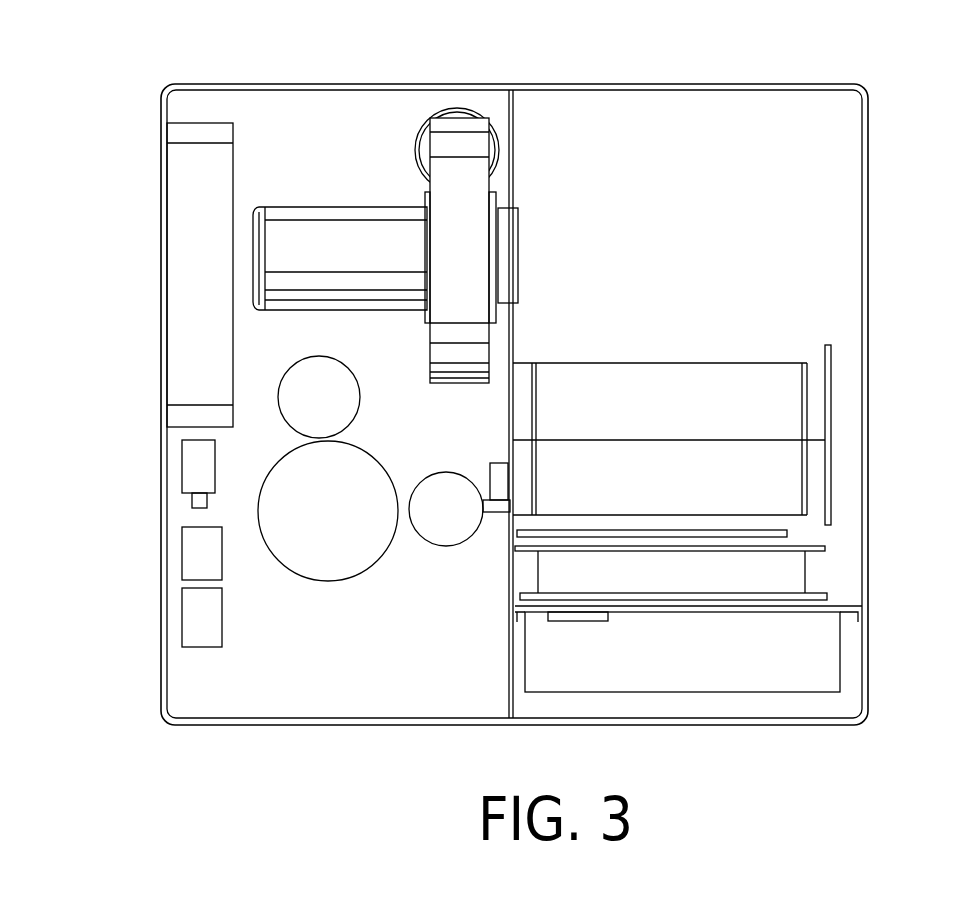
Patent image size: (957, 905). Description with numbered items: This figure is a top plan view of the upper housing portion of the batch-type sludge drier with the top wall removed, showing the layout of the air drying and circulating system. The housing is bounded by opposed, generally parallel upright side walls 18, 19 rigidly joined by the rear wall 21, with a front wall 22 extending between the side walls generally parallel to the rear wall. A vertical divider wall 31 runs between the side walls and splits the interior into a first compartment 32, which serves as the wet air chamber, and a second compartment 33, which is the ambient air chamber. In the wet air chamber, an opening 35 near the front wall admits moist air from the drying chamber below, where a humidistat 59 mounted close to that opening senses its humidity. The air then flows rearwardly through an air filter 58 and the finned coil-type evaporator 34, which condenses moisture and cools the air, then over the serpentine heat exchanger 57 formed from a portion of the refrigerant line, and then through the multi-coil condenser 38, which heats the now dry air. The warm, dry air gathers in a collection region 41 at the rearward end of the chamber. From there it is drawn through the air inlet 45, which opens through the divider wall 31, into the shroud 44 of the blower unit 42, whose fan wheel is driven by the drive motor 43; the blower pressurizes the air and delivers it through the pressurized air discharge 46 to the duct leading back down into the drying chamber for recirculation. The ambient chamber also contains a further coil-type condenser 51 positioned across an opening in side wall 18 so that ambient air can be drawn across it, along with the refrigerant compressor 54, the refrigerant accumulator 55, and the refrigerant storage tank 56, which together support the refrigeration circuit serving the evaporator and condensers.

The side wall 18 is at (163, 562).
The side wall 19 is at (868, 265).
The rear wall 21 is at (630, 82).
The front wall 22 is at (430, 722).
The vertical divider wall 31 is at (515, 122).
The first compartment 32 is at (820, 190).
The second compartment 33 is at (285, 685).
The evaporator 34 is at (790, 556).
The opening 35 is at (800, 690).
The condenser 38 is at (787, 380).
The collection region 41 is at (726, 214).
The blower unit 42 is at (408, 202).
The drive motor 43 is at (335, 220).
The shroud 44 is at (440, 331).
The air inlet 45 is at (500, 258).
The pressurized air discharge 46 is at (428, 150).
The condenser 51 is at (190, 205).
The compressor 54 is at (313, 560).
The accumulator 55 is at (434, 523).
The storage tank 56 is at (327, 402).
The serpentine heat exchanger 57 is at (630, 532).
The air filter 58 is at (757, 593).
The humidistat 59 is at (577, 617).